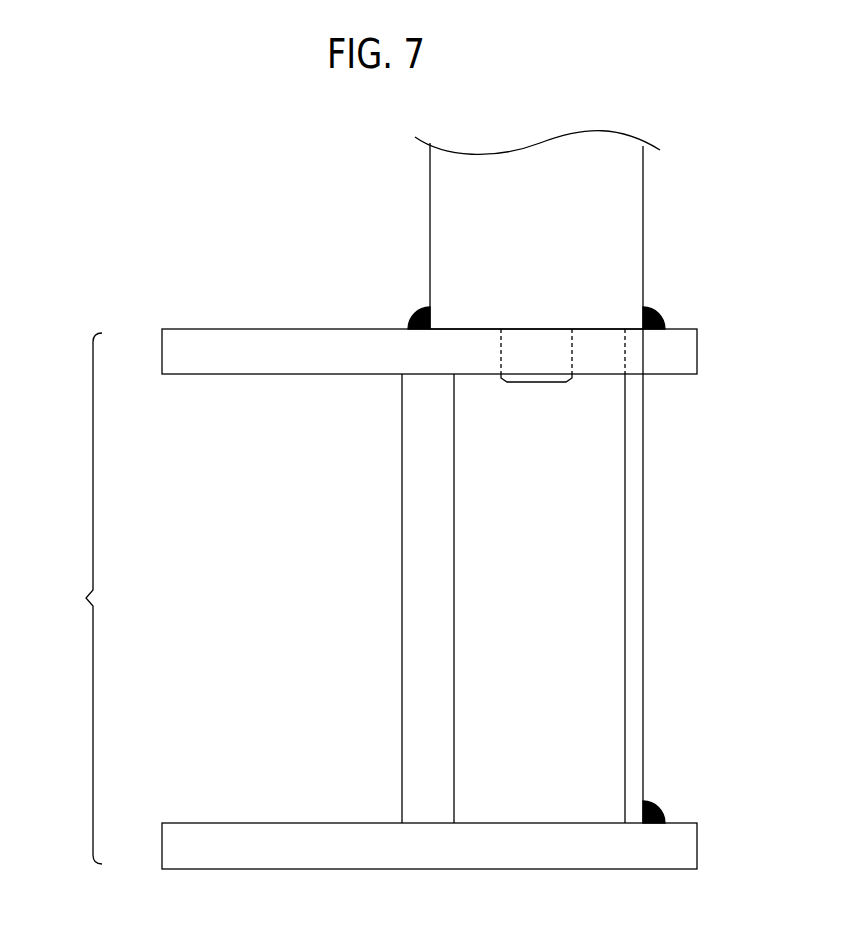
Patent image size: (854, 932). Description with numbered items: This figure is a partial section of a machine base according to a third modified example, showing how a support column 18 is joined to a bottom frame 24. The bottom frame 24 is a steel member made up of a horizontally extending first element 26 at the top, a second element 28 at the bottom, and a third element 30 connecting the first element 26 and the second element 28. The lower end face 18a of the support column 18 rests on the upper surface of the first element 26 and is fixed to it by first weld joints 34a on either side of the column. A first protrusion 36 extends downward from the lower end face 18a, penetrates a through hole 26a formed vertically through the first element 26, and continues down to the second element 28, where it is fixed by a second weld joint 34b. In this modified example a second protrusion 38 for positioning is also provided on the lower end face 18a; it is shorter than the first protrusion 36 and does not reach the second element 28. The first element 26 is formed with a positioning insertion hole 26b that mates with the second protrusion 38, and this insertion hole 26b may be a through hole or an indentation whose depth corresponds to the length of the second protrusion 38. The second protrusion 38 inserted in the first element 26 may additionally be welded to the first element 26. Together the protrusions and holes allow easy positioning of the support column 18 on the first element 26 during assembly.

The support column 18 is at (533, 160).
The lower end face 18a is at (482, 330).
The bottom frame 24 is at (78, 598).
The first element 26 is at (168, 352).
The through hole 26a is at (641, 358).
The insertion hole 26b is at (505, 345).
The second element 28 is at (168, 846).
The third element 30 is at (402, 598).
The first weld joint 34a is at (413, 313).
The second weld joint 34b is at (662, 805).
The first protrusion 36 is at (626, 561).
The second protrusion 38 is at (549, 383).